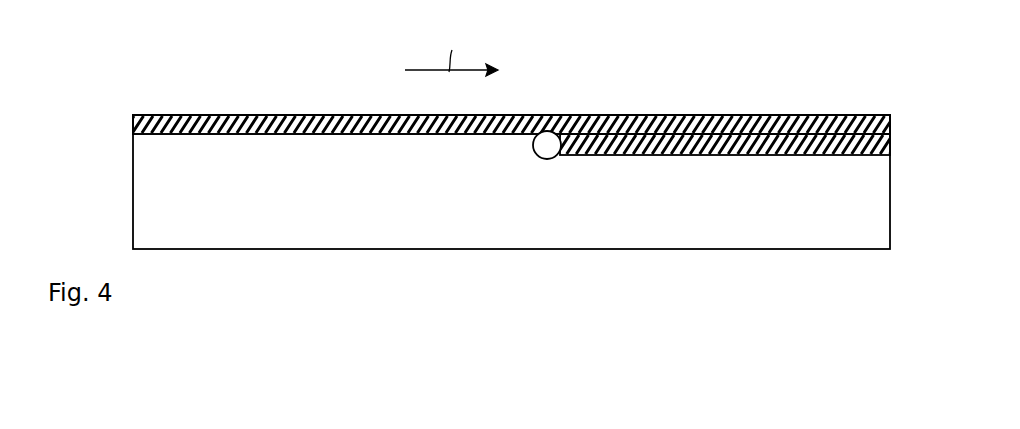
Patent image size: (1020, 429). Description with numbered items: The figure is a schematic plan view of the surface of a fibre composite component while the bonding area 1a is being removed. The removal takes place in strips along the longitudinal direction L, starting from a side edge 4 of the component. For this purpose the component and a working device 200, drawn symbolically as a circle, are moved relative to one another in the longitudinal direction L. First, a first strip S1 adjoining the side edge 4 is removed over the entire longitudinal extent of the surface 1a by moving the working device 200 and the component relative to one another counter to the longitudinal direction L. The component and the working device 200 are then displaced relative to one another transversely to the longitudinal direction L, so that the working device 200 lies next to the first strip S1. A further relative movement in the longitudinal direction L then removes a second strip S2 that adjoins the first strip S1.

The bonding area 1a is at (294, 231).
The first strip S1 is at (205, 114).
The second strip S2 is at (673, 156).
The side edge 4 is at (641, 112).
The working device 200 is at (541, 162).
The longitudinal direction L is at (451, 47).